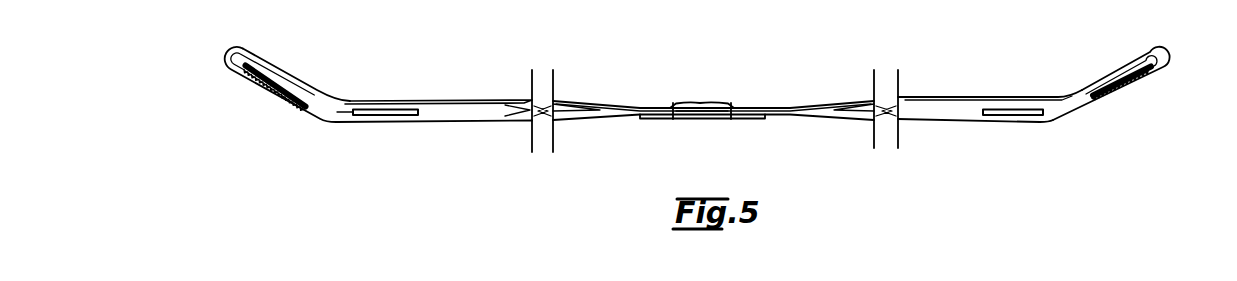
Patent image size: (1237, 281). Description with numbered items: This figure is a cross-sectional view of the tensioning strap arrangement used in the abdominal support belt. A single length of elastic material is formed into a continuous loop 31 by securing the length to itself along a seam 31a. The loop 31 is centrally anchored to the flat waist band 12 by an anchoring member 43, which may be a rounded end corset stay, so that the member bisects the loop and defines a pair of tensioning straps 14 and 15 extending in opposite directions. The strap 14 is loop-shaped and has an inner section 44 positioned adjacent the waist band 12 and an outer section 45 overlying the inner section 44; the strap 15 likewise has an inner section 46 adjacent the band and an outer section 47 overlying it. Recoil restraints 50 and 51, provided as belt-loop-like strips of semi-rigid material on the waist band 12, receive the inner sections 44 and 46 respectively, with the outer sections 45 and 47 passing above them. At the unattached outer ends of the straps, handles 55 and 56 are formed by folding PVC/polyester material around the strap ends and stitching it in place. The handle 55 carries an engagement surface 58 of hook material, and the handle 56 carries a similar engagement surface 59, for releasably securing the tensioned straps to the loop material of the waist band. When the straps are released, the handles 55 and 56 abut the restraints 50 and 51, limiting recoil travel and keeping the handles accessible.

The waist band 12 is at (683, 120).
The tensioning strap 14 is at (581, 101).
The tensioning strap 15 is at (841, 101).
The continuous loop 31 is at (791, 104).
The seam 31a is at (708, 110).
The anchoring member 43 is at (696, 102).
The inner section 44 is at (477, 123).
The outer section 45 is at (473, 100).
The inner section 46 is at (938, 124).
The outer section 47 is at (948, 96).
The recoil restraint 50 is at (381, 110).
The recoil restraint 51 is at (1013, 109).
The handle 55 is at (263, 62).
The handle 56 is at (1121, 68).
The engagement surface 58 is at (250, 84).
The engagement surface 59 is at (1127, 98).